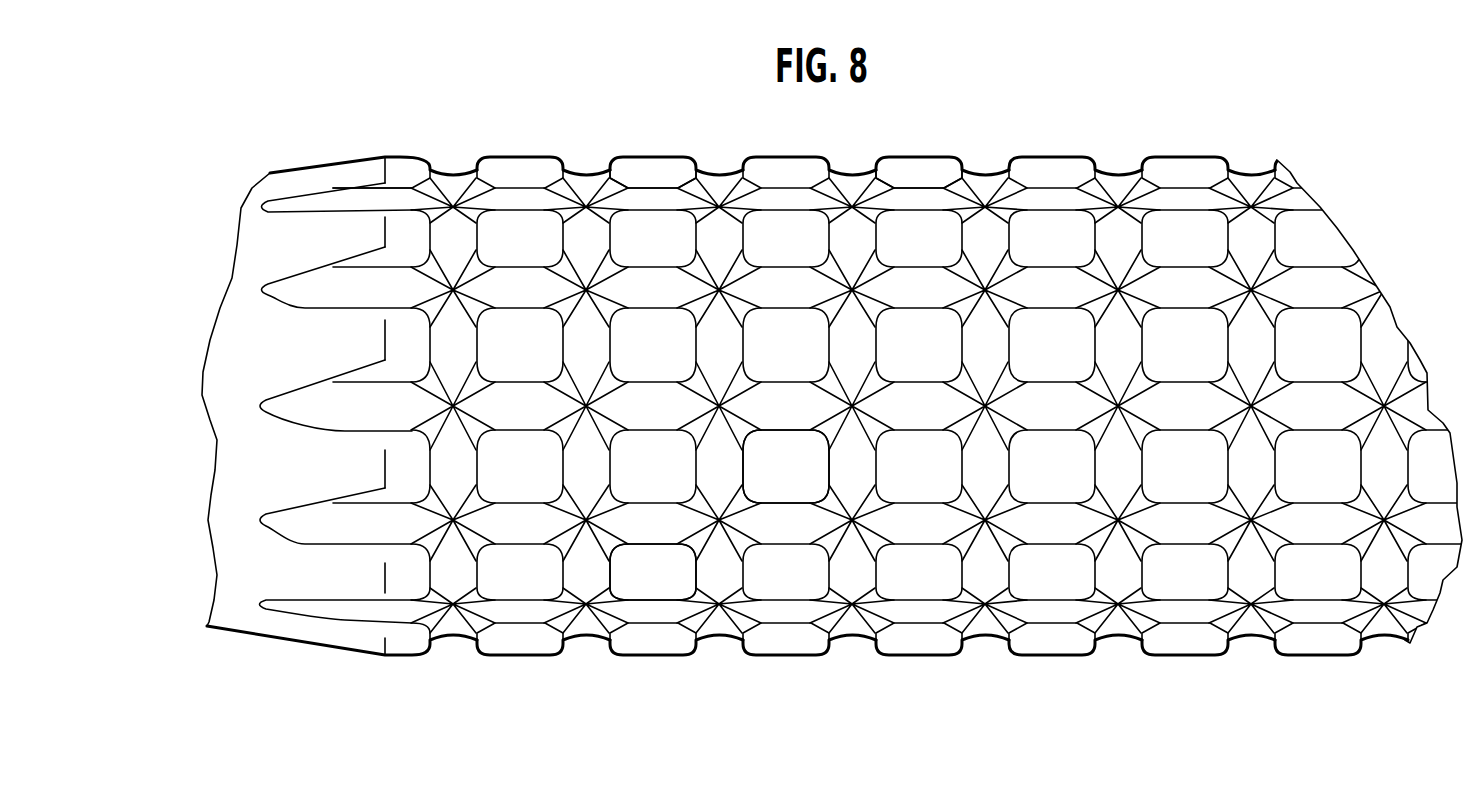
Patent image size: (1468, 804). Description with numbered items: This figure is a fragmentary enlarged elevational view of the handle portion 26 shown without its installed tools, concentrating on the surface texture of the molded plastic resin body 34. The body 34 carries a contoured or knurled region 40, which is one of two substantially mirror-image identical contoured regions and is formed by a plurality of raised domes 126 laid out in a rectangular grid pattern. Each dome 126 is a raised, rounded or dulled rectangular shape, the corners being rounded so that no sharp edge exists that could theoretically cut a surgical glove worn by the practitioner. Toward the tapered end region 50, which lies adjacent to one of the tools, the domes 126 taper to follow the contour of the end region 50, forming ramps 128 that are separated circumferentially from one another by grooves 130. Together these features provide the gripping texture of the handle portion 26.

The handle portion 26 is at (1168, 128).
The molded plastic resin body 34 is at (920, 157).
The contoured region 40 is at (653, 150).
The tapered end region 50 is at (322, 158).
The raised dome 126 is at (780, 480).
The ramp 128 is at (401, 348).
The groove 130 is at (303, 402).